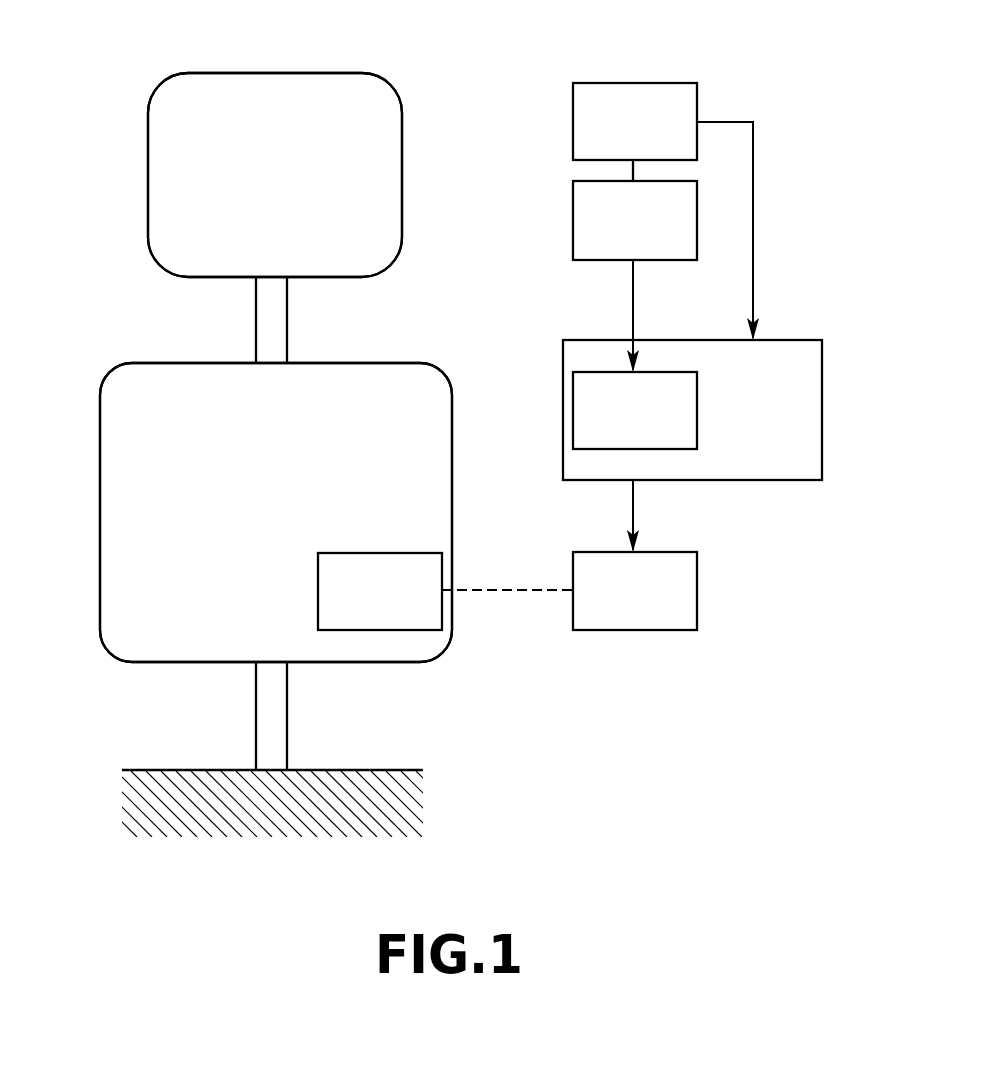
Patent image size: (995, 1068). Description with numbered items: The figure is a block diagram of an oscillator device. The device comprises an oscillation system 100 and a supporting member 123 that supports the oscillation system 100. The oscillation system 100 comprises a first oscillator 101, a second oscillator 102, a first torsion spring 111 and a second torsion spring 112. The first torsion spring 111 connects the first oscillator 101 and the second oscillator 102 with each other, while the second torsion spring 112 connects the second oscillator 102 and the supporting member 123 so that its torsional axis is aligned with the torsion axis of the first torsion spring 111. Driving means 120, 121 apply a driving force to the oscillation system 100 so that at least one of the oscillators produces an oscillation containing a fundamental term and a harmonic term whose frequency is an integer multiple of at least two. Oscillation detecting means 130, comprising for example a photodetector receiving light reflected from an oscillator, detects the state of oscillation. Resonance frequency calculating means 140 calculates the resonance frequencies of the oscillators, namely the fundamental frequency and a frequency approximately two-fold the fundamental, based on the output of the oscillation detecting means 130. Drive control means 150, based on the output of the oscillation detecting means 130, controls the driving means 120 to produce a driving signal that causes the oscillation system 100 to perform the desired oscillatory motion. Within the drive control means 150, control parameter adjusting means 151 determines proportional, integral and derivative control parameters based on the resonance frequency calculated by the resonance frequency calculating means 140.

The oscillation system 100 is at (95, 330).
The first oscillator 101 is at (220, 73).
The second oscillator 102 is at (100, 492).
The first torsion spring 111 is at (256, 336).
The second torsion spring 112 is at (256, 737).
The driving means 121 is at (318, 586).
The supporting member 123 is at (128, 807).
The oscillation detecting means 130 is at (573, 123).
The resonance frequency calculating means 140 is at (573, 218).
The drive control means 150 is at (822, 410).
The control parameter adjusting means 151 is at (573, 408).
The driving means 120 is at (573, 570).